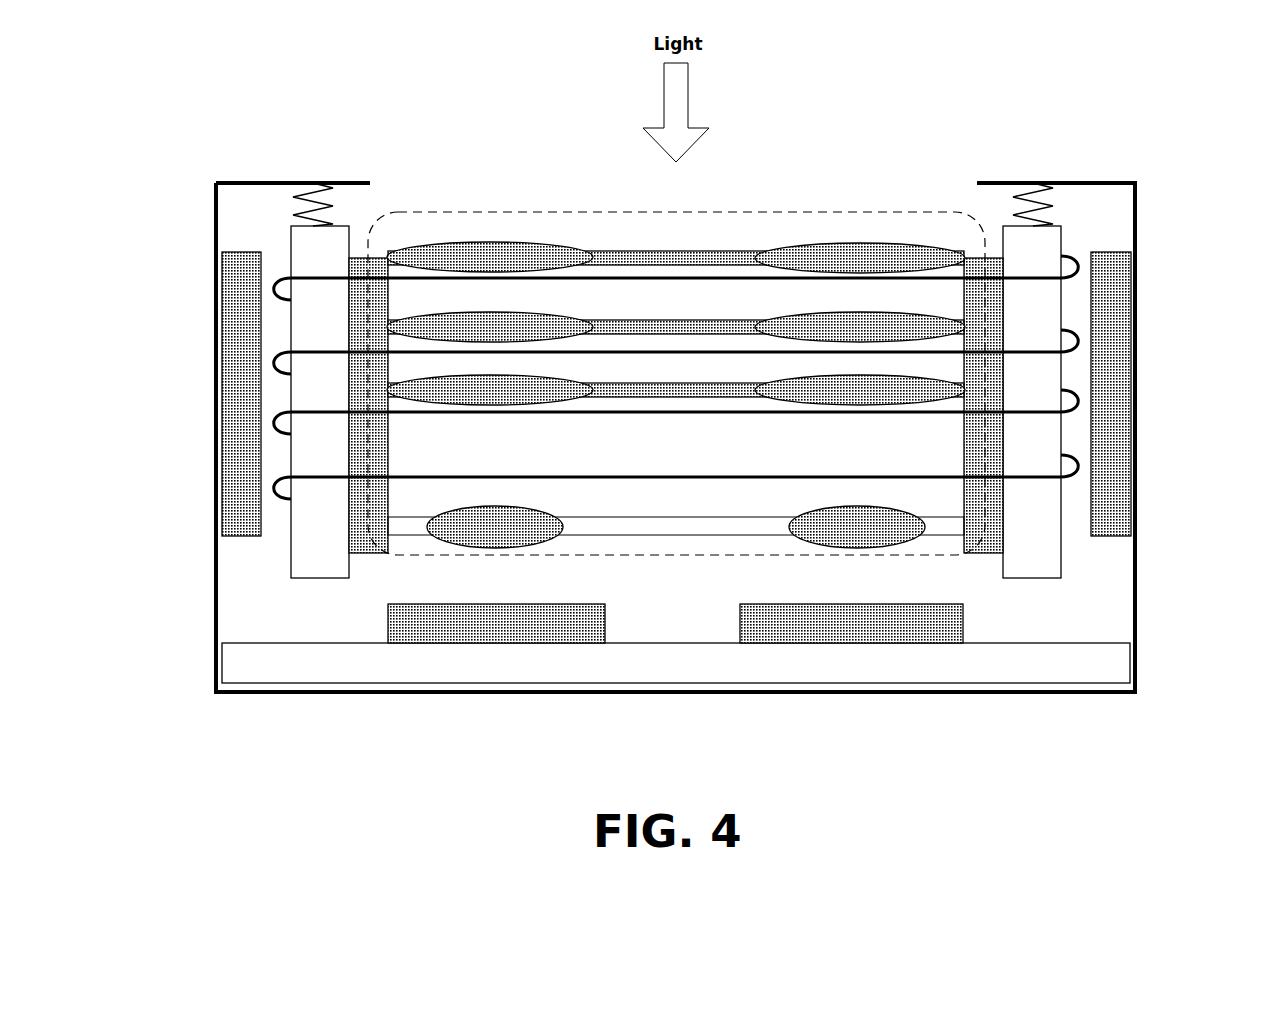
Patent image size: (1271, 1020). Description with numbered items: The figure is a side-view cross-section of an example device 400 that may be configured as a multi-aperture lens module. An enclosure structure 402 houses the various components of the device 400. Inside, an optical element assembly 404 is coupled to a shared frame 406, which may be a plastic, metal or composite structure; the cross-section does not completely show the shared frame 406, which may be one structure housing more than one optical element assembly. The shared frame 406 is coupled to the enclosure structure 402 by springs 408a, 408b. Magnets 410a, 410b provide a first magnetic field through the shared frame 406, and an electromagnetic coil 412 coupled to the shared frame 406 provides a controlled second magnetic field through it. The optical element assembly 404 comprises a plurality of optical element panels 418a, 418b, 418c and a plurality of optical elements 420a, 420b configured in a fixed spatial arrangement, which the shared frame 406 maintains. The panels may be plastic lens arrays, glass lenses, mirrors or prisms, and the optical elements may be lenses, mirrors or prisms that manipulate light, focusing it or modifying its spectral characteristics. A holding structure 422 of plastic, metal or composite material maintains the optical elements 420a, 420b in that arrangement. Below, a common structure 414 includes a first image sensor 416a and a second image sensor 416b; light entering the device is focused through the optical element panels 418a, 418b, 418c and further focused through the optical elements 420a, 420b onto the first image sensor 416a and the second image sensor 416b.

The device 400 is at (1210, 158).
The enclosure structure 402 is at (216, 207).
The optical element assembly 404 is at (870, 212).
The shared frame 406 is at (676, 402).
The spring 408a is at (303, 198).
The spring 408b is at (1018, 200).
The magnet 410a is at (241, 397).
The magnet 410b is at (1115, 397).
The electromagnetic coil 412 is at (282, 502).
The common structure 414 is at (676, 663).
The first image sensor 416a is at (496, 623).
The second image sensor 416b is at (851, 623).
The optical element panel 418a is at (652, 251).
The optical element panel 418b is at (652, 321).
The optical element panel 418c is at (652, 384).
The optical element 420a is at (495, 527).
The optical element 420b is at (857, 527).
The holding structure 422 is at (652, 517).